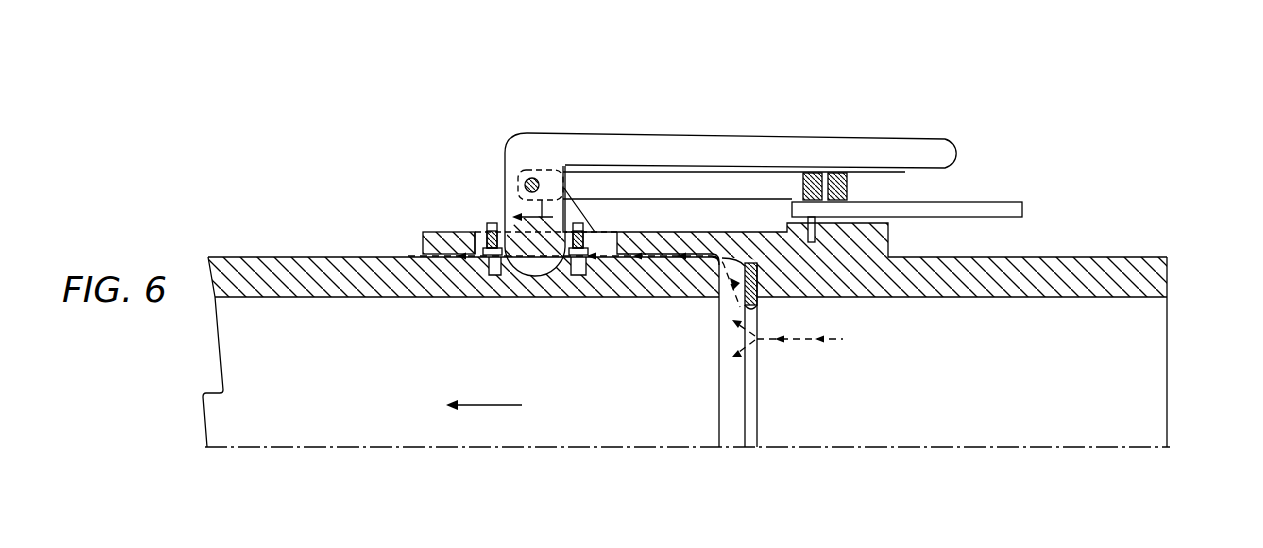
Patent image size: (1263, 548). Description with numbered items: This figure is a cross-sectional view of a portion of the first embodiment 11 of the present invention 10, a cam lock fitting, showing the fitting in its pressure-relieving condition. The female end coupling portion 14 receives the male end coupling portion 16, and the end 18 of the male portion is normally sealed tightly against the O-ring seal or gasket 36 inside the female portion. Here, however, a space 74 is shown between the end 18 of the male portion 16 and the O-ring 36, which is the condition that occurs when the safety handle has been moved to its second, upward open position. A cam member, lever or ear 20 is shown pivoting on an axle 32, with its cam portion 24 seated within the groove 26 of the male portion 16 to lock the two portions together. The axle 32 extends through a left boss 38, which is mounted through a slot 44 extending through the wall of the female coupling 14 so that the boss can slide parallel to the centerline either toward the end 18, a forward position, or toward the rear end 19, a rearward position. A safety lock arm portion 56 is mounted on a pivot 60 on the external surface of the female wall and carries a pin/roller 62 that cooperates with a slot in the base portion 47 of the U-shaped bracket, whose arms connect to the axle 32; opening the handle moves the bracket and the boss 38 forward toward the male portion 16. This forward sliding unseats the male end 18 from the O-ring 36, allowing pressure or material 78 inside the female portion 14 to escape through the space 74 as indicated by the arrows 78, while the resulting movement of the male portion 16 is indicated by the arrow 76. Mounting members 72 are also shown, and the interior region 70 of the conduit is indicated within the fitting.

The present invention 10 is at (1176, 156).
The first embodiment 11 is at (1057, 180).
The female end coupling portion 14 is at (1086, 252).
The male end coupling portion 16 is at (279, 248).
The end 18 is at (424, 232).
The rear end 19 is at (1168, 284).
The cam member, lever or ear 20 is at (940, 128).
The cam portion 24 is at (538, 268).
The groove 26 is at (503, 262).
The axle 32 is at (532, 178).
The O-ring seal or gasket 36 is at (752, 307).
The left boss 38 is at (503, 226).
The slot 44 is at (480, 236).
The base portion 47 is at (848, 183).
The safety lock arm portion 56 is at (993, 203).
The pivot 60 is at (790, 226).
The pin/roller 62 is at (825, 172).
The tank interior 70 is at (1058, 389).
The mounting member 72 is at (490, 297).
The space 74 is at (730, 410).
The arrow 76 is at (543, 200).
The pressure or material 78 is at (396, 247).